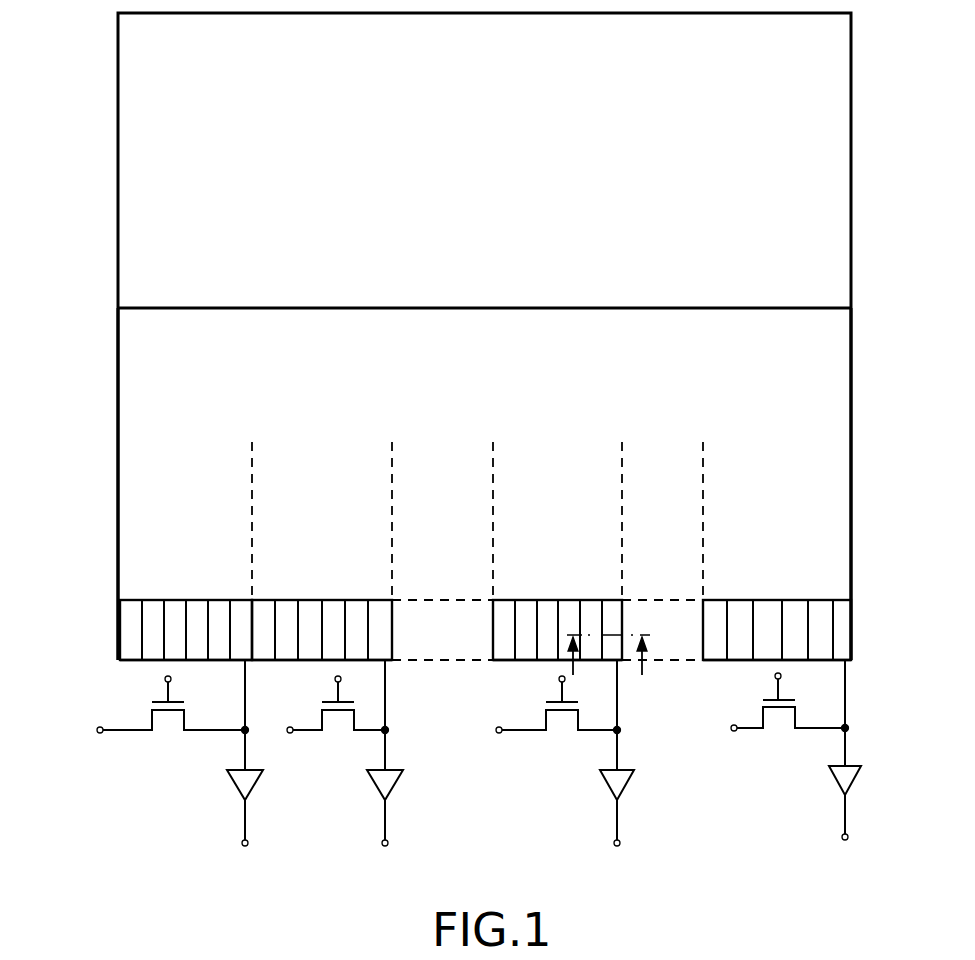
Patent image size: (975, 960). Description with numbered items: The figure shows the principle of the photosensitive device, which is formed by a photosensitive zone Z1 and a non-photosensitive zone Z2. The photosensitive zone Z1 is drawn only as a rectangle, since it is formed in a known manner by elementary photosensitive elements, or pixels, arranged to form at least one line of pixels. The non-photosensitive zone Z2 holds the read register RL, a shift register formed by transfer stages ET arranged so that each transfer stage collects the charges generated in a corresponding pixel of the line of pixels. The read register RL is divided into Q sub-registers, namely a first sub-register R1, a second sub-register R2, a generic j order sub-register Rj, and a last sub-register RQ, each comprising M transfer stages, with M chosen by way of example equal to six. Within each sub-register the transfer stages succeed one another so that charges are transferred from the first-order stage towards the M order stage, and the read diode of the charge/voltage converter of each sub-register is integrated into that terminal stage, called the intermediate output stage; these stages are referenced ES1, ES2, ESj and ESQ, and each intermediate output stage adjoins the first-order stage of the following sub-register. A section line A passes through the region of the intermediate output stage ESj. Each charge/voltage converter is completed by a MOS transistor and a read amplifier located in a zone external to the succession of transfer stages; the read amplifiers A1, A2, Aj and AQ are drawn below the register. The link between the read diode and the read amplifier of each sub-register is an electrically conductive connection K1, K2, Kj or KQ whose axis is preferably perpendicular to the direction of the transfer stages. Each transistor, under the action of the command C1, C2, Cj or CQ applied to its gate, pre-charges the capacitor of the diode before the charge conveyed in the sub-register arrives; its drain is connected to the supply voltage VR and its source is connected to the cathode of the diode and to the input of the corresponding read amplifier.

The photosensitive zone Z1 is at (108, 17).
The non-photosensitive zone Z2 is at (108, 310).
The first sub-register R1 is at (120, 476).
The second sub-register R2 is at (252, 476).
The j order sub-register Rj is at (612, 482).
The Q order sub-register RQ is at (703, 476).
The transfer stage ET is at (153, 615).
The intermediate output stage of first sub-register ES1 is at (242, 615).
The intermediate output stage of second sub-register ES2 is at (382, 615).
The intermediate output stage ESj is at (612, 615).
The intermediate output stage of Q order sub-register ESQ is at (840, 615).
The read register RL is at (867, 630).
The section line A- A is at (613, 661).
The electrically conductive connection of first sub-register K1 is at (247, 683).
The electrically conductive connection of second sub-register K2 is at (387, 683).
The electrically conductive connection Kj is at (619, 692).
The electrically conductive connection of Q order sub-register KQ is at (847, 683).
The command of first sub-register transistor C1 is at (174, 699).
The command of second sub-register transistor C2 is at (339, 699).
The command Cj is at (559, 697).
The command of Q order sub-register transistor CQ is at (791, 696).
The supply voltage VR is at (413, 716).
The read amplifier of first sub-register A1 is at (243, 782).
The read amplifier of second sub-register A2 is at (383, 782).
The read amplifier Aj is at (613, 782).
The read amplifier of Q order sub-register AQ is at (841, 780).